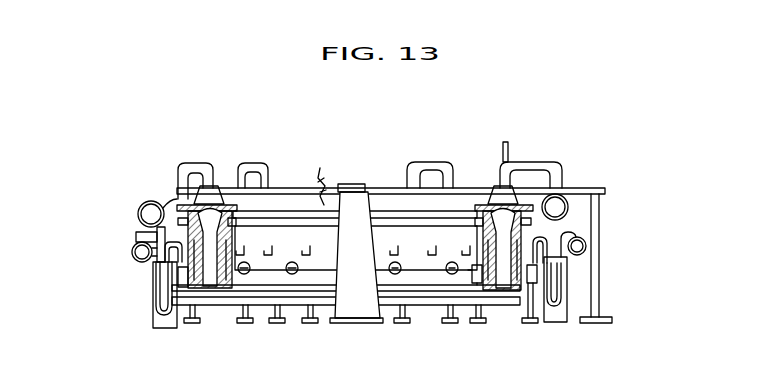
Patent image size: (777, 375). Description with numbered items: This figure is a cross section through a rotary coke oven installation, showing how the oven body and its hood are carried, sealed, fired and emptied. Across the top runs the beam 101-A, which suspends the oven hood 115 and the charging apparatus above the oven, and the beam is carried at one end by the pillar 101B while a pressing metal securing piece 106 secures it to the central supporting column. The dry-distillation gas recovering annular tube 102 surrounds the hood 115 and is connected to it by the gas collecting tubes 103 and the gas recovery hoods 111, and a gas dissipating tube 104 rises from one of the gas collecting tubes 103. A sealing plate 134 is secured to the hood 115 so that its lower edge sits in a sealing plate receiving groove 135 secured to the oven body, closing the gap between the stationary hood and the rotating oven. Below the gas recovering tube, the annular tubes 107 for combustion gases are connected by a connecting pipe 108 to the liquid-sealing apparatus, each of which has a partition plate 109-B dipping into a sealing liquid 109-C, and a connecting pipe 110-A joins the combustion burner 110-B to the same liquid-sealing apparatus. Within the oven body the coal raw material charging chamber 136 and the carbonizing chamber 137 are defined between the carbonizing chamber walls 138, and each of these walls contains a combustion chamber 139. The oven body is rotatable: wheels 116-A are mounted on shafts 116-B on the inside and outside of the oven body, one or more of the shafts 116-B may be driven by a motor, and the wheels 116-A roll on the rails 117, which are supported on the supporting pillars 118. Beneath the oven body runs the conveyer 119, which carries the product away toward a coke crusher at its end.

The top frame bar 101-A is at (583, 189).
The frame post 101B is at (601, 220).
The dry-distillation gas recovering annular tube 102 is at (146, 211).
The gas collecting tube 103 is at (437, 161).
The gas dissipating tube 104 is at (509, 147).
The pressing metal securing piece 106 is at (353, 183).
The annular tube for combustion gases 107 is at (132, 254).
The connecting pipe 108 is at (147, 236).
The partition plate 109-B is at (161, 303).
The sealing liquid 109-C is at (157, 291).
The connecting pipe 110-A is at (187, 348).
The combustion burner 110-B is at (266, 219).
The gas recovery hood 111 is at (270, 193).
The oven hood 115 is at (367, 300).
The wheel 116-A is at (309, 268).
The shaft 116-B is at (260, 268).
The rail 117 is at (541, 302).
The supporting pillar 118 is at (308, 308).
The conveyer 119 is at (437, 298).
The sealing plate 134 is at (186, 210).
The sealing plate receiving groove 135 is at (393, 219).
The coal raw material charging chamber 136 is at (498, 206).
The carbonizing chamber 137 is at (207, 280).
The carbonizing chamber wall 138 is at (505, 288).
The combustion chamber 139 is at (489, 284).